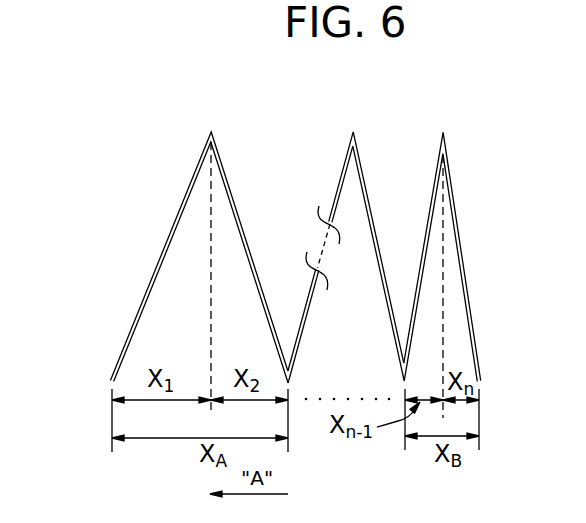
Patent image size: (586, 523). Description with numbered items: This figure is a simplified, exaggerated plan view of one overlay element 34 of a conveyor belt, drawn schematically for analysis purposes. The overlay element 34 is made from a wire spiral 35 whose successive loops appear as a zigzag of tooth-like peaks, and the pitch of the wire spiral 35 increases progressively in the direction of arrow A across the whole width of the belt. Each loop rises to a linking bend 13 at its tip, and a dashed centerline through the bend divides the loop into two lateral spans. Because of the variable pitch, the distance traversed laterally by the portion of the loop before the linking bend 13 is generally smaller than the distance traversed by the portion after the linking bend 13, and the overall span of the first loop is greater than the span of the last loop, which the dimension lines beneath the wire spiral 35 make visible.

The linking bend 13 is at (216, 122).
The overlay element 34 is at (396, 120).
The wire spiral 35 is at (470, 249).